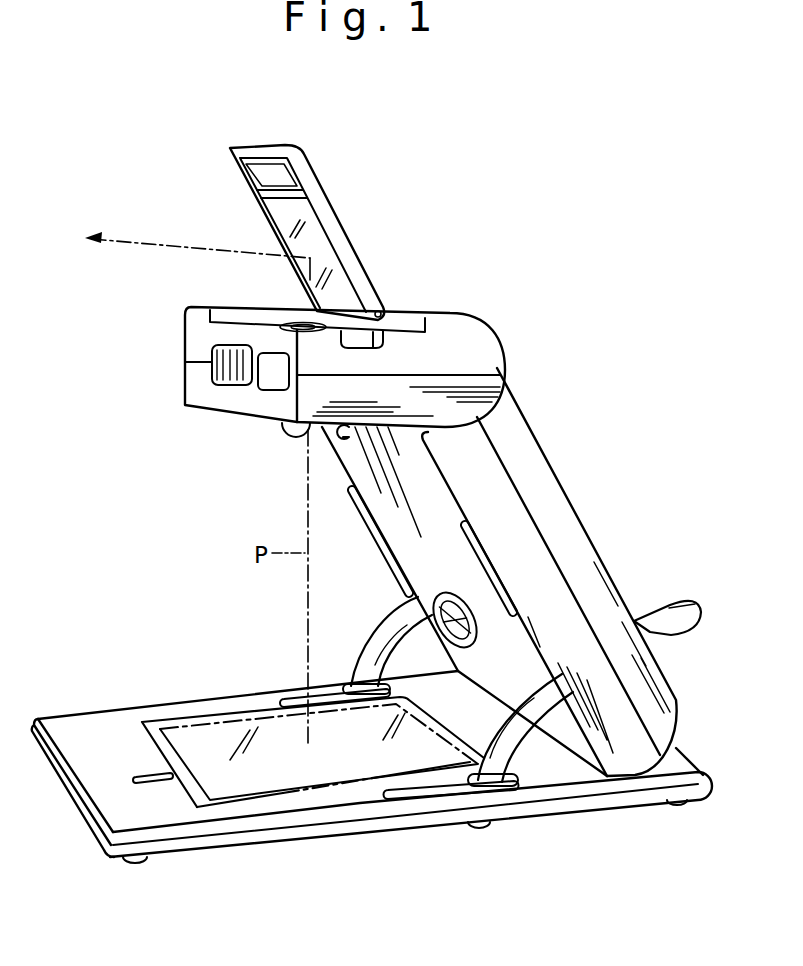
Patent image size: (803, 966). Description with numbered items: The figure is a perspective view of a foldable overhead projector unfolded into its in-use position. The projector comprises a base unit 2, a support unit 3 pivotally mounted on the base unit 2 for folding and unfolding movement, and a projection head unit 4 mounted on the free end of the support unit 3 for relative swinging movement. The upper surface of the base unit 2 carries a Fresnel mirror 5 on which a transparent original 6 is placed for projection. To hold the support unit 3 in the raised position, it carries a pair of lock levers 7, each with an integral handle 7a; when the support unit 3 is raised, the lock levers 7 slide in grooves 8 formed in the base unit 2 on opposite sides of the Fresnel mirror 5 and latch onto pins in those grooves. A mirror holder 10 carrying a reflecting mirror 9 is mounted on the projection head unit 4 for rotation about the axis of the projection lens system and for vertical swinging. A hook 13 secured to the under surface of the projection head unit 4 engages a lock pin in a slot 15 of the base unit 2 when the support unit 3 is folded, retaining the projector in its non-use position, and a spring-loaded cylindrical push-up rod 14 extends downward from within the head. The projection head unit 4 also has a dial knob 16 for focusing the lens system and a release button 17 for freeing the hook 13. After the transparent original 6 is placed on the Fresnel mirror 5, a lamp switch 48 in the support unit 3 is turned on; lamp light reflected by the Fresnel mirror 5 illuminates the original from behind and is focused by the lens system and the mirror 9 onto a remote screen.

The base unit 2 is at (195, 855).
The support unit 3 is at (563, 485).
The projection head unit 4 is at (468, 314).
The Fresnel mirror 5 is at (153, 720).
The transparent original 6 is at (361, 783).
The lock lever 7 is at (378, 626).
The handle 7a is at (693, 600).
The groove 8 is at (449, 800).
The reflecting mirror 9 is at (283, 218).
The mirror holder 10 is at (326, 195).
The hook 13 is at (343, 440).
The push-up rod 14 is at (296, 438).
The slot 15 is at (137, 778).
The dial knob 16 is at (210, 378).
The release button 17 is at (268, 382).
The lamp switch 48 is at (470, 614).